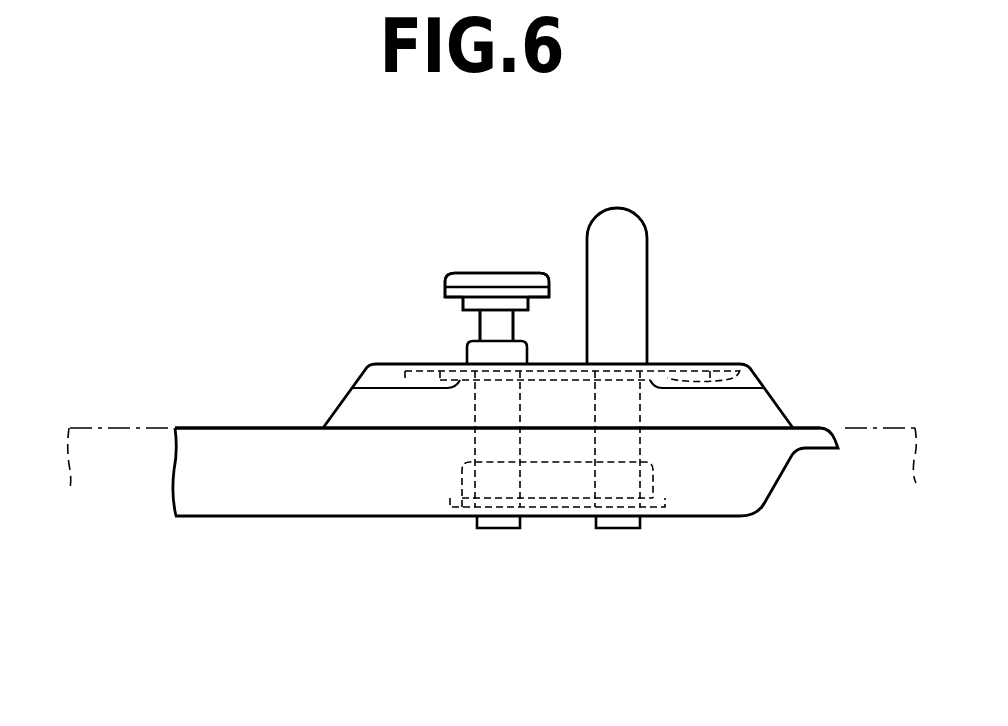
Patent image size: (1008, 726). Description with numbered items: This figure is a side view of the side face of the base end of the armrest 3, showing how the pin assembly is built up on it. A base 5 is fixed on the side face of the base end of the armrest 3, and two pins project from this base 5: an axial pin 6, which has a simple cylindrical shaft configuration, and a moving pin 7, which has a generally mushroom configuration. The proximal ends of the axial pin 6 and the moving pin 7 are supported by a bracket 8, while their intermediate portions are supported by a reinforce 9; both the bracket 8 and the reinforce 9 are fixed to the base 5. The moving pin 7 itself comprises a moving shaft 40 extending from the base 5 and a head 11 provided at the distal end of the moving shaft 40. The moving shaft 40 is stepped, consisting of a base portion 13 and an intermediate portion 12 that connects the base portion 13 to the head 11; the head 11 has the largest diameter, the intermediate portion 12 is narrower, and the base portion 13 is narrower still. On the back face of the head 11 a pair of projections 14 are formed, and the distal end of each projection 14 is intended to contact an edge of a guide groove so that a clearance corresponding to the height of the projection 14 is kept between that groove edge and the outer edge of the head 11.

The armrest 3 is at (852, 413).
The base 5 is at (290, 427).
The axial pin 6 is at (605, 208).
The moving pin 7 is at (500, 267).
The bracket 8 is at (560, 507).
The reinforce 9 is at (740, 370).
The head 11 is at (450, 274).
The intermediate portion 12 is at (467, 311).
The base portion 13 is at (505, 325).
The projection 14 is at (453, 299).
The moving shaft 40 is at (554, 318).